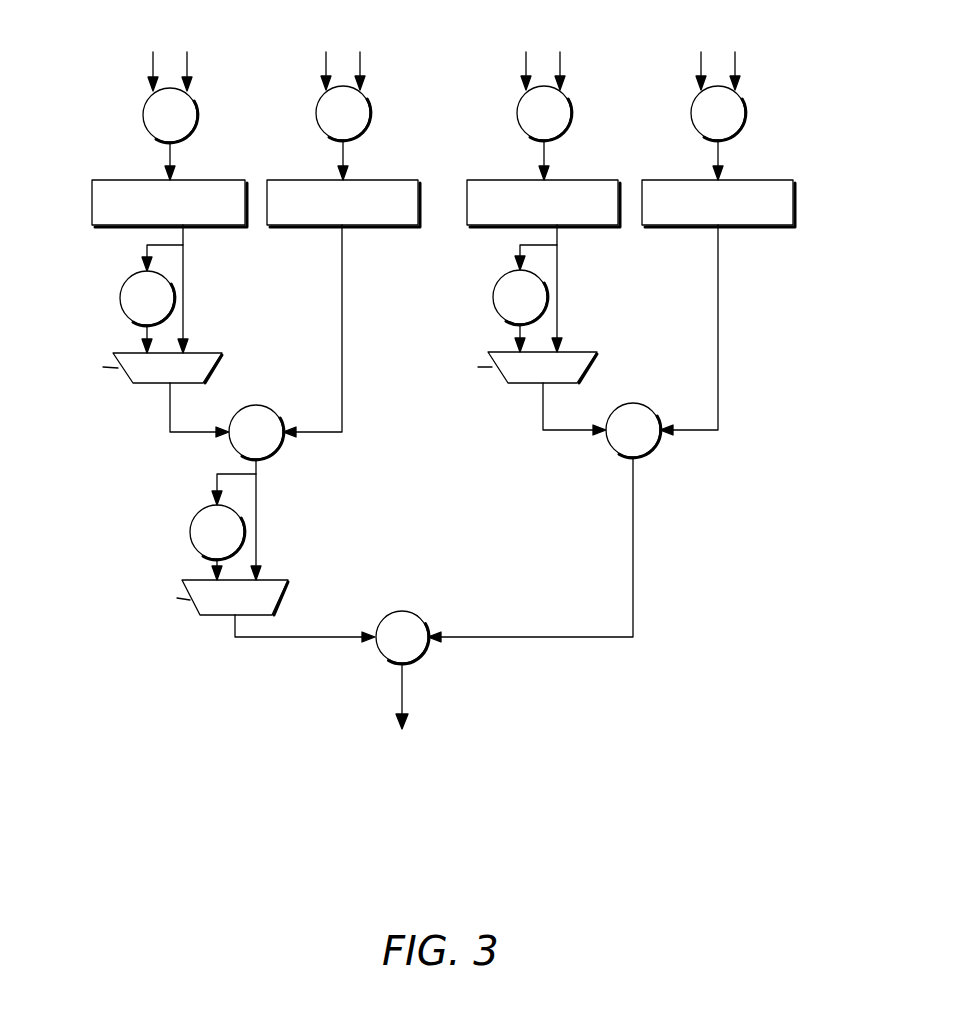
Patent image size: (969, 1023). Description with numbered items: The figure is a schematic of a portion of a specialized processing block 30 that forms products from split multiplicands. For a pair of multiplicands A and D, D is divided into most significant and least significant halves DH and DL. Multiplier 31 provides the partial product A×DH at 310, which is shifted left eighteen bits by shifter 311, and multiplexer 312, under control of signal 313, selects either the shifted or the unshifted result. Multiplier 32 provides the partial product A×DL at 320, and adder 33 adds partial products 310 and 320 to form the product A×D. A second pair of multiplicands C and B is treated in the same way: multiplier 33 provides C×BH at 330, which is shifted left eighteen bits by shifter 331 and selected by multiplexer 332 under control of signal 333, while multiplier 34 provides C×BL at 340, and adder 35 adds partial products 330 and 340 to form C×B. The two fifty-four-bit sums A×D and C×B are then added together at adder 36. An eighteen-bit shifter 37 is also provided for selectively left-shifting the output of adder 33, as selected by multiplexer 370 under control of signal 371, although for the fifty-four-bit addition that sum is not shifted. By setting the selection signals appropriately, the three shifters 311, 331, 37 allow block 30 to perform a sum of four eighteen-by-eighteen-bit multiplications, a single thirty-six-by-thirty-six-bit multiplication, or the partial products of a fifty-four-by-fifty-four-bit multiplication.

The specialized processing block 30 is at (851, 80).
The multiplier 31 is at (143, 118).
The multiplier 32 is at (355, 139).
The adder 33 is at (253, 405).
The multiplier 34 is at (745, 113).
The adder 35 is at (633, 403).
The adder 36 is at (400, 611).
The shifter 37 is at (190, 525).
The partial product A×DH 310 is at (92, 205).
The shifter 311 is at (120, 302).
The multiplexer 312 is at (152, 385).
The control signal 313 is at (118, 370).
The partial product A×DL 320 is at (365, 227).
The partial product C×BH 330 is at (498, 178).
The shifter 331 is at (493, 300).
The multiplexer 332 is at (532, 385).
The control signal 333 is at (492, 370).
The partial product C×BL 340 is at (774, 178).
The multiplexer 370 is at (215, 617).
The control signal 371 is at (188, 604).